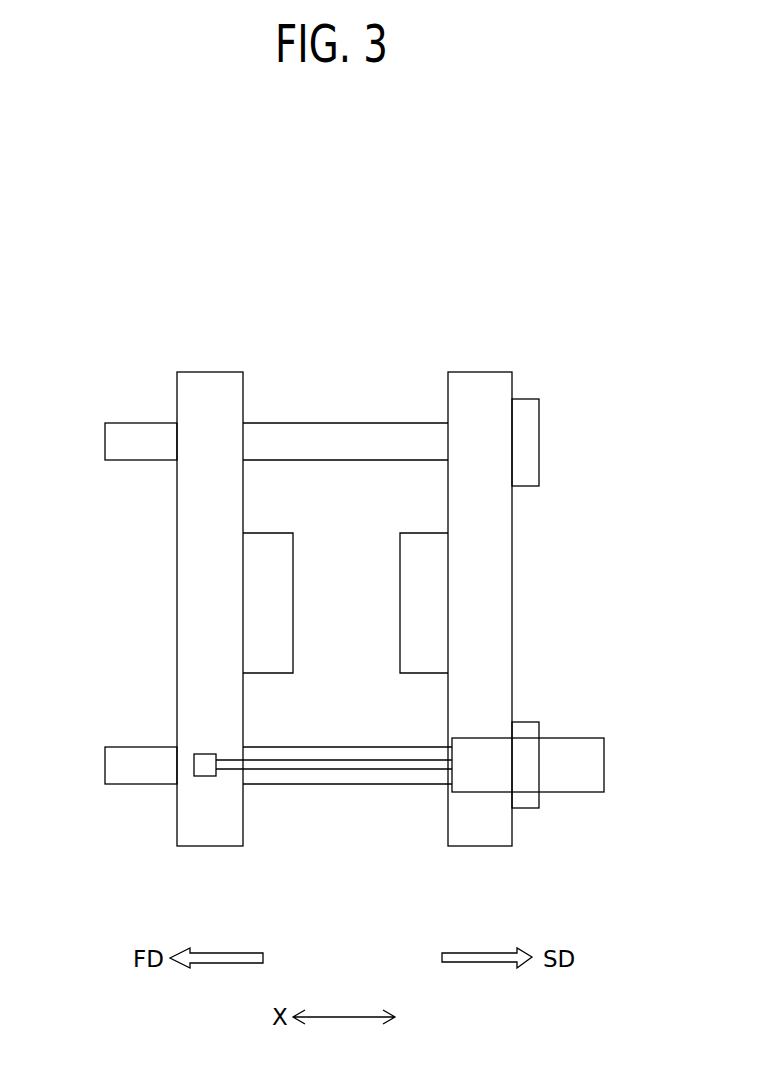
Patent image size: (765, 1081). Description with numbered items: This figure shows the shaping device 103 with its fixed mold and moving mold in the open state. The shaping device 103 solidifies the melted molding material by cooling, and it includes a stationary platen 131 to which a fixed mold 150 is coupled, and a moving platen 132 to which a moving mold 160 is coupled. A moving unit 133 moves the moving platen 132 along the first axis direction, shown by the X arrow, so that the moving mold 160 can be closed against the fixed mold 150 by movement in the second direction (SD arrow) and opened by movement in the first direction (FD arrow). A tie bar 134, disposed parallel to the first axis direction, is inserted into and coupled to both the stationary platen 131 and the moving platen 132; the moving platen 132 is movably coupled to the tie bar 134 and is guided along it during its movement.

The shaping device 103 is at (138, 312).
The stationary platen 131 is at (477, 388).
The moving platen 132 is at (212, 388).
The moving unit 133 is at (564, 778).
The tie bar 134 is at (344, 435).
The fixed mold 150 is at (413, 572).
The moving mold 160 is at (278, 641).